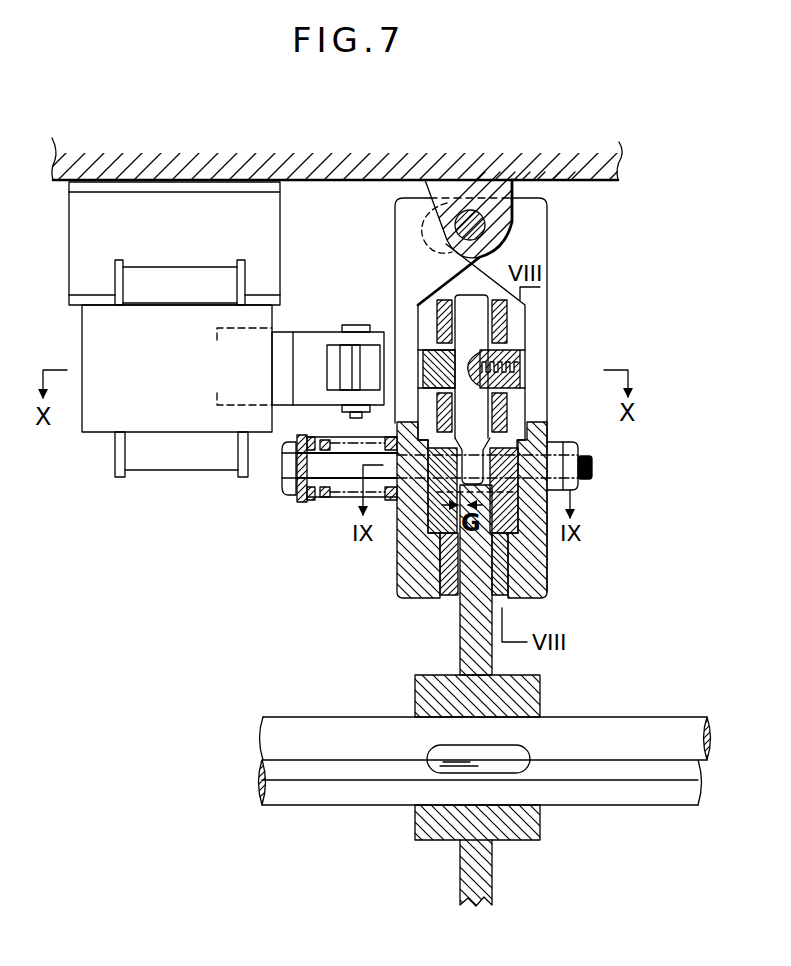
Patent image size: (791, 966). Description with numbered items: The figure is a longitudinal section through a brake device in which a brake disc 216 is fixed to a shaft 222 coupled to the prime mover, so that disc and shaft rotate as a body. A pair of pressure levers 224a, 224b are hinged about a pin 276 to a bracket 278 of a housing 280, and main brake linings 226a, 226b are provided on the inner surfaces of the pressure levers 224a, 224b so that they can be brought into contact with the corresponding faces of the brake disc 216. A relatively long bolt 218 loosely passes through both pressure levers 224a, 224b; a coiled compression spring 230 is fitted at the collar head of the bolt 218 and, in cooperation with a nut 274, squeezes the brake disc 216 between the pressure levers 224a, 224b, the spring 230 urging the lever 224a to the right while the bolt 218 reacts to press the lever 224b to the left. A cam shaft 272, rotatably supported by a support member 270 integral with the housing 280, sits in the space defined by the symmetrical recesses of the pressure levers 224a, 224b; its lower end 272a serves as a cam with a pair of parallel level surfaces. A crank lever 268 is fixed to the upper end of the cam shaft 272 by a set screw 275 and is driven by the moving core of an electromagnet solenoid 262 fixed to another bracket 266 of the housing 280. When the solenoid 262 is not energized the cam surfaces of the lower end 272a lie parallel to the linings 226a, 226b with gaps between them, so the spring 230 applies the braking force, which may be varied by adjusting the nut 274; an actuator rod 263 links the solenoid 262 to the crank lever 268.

The brake disc 216 is at (517, 697).
The bolt 218 is at (292, 480).
The shaft 222 is at (350, 770).
The pressure lever 224a is at (408, 205).
The pressure lever 224b is at (525, 235).
The main brake lining 226a is at (450, 598).
The main brake lining 226b is at (505, 600).
The coiled compression spring 230 is at (310, 500).
The electromagnet solenoid 262 is at (105, 407).
The actuator rod 263 is at (314, 348).
The bracket 266 is at (195, 213).
The crank lever 268 is at (440, 368).
The support member 270 is at (440, 287).
The cam shaft 272 is at (473, 325).
The lower end of the cam shaft 272a is at (535, 423).
The nut 274 is at (552, 445).
The set screw 275 is at (518, 360).
The pin 276 is at (517, 215).
The bracket 278 is at (465, 210).
The housing 280 is at (620, 162).